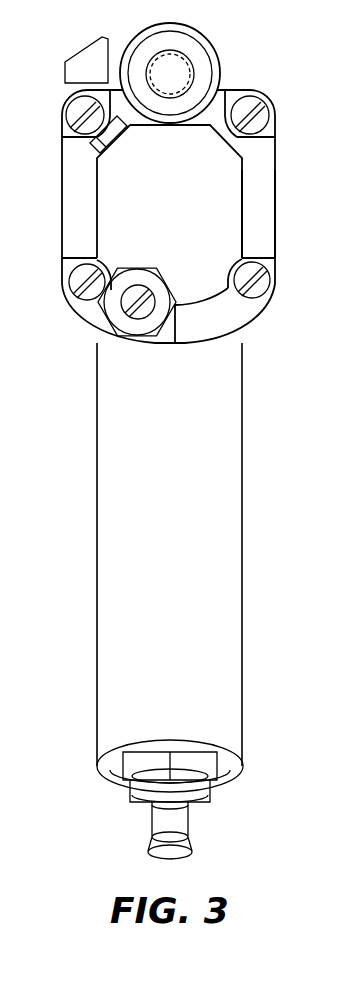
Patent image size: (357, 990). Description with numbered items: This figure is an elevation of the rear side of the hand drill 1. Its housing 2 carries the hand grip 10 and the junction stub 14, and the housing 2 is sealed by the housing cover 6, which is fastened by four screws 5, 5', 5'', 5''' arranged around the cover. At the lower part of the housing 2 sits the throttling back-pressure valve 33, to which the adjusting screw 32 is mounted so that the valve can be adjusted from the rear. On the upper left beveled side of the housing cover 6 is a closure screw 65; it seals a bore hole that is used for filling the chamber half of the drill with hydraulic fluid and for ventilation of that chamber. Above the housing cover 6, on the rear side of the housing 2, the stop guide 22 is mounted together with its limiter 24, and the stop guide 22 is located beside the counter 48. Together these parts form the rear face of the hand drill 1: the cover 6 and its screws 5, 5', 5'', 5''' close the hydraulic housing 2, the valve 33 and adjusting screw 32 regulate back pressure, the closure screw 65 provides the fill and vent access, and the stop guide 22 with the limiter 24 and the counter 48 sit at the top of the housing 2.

The hand drill 1 is at (268, 542).
The housing 2 is at (263, 164).
The screw 5 is at (62, 115).
The screw 5' is at (271, 112).
The screw 5'' is at (63, 285).
The screw 5''' is at (277, 285).
The housing cover 6 is at (227, 240).
The hand grip 10 is at (103, 548).
The junction stub 14 is at (163, 820).
The stop guide 22 is at (180, 77).
The limiter 24 is at (185, 43).
The adjusting screw 32 is at (133, 290).
The throttling back-pressure valve 33 is at (123, 325).
The counter 48 is at (90, 55).
The closure screw 65 is at (93, 152).